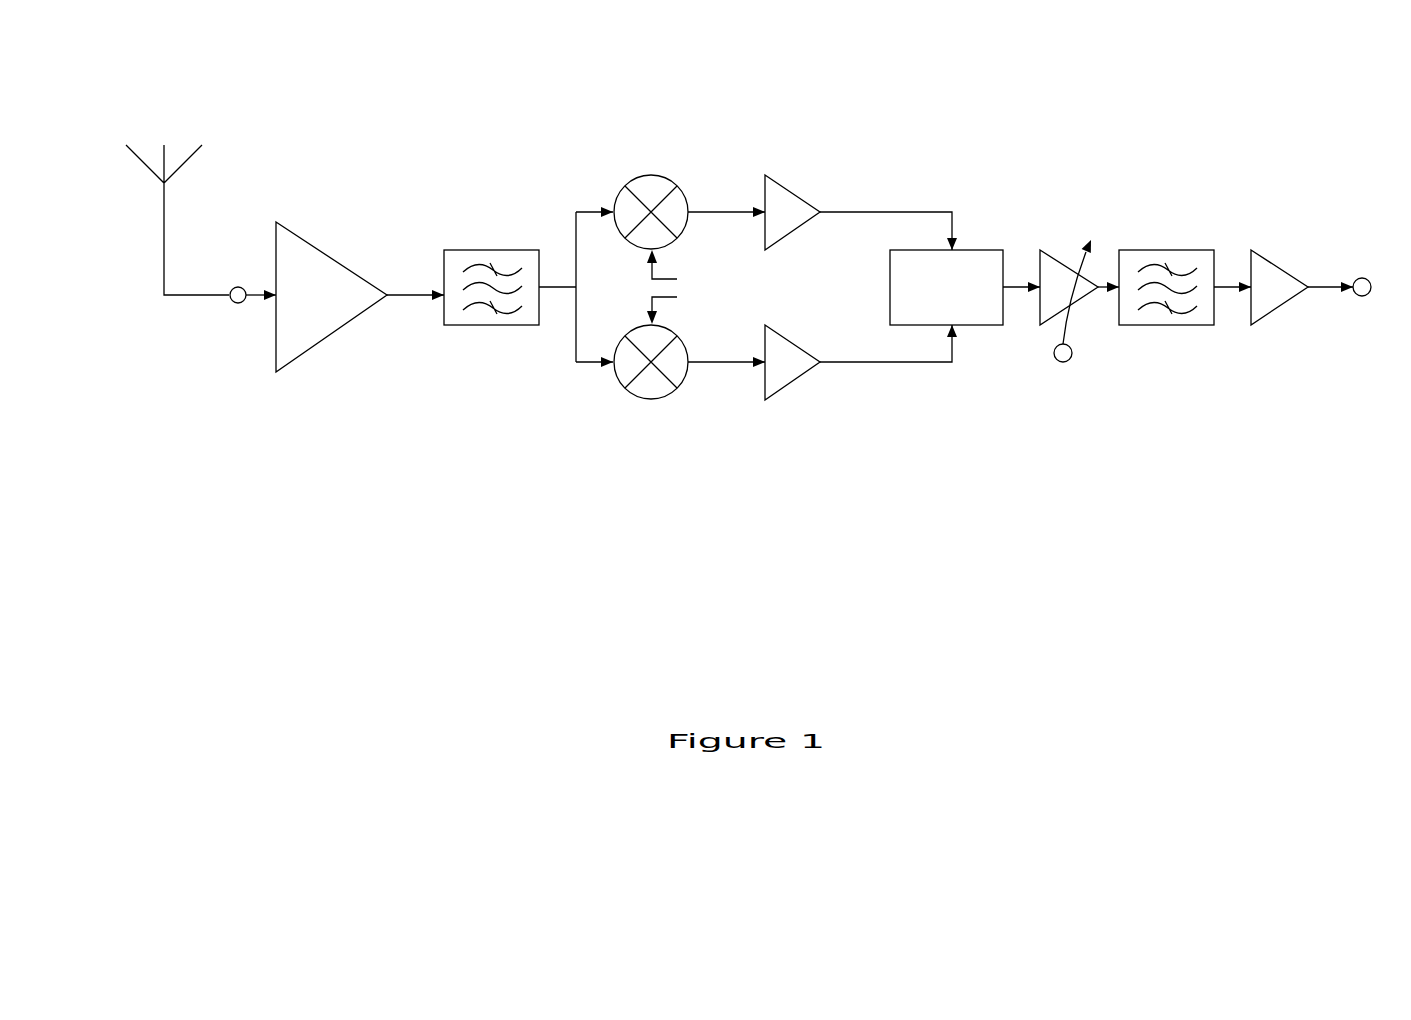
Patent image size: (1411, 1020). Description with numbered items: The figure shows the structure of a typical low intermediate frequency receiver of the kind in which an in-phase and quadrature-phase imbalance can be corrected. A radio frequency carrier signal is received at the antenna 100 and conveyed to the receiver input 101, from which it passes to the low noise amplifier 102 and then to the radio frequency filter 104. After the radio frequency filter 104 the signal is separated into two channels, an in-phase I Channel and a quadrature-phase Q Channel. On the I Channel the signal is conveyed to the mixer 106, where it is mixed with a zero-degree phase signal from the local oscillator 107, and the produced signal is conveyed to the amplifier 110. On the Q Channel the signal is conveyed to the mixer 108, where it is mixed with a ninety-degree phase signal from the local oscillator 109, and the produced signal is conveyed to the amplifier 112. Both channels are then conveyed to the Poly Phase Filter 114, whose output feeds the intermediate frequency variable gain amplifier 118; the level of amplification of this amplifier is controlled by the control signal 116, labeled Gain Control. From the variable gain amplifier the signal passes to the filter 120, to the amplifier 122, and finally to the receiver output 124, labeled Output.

The antenna 100 is at (164, 210).
The receiver input 101 is at (241, 303).
The low noise amplifier 102 is at (292, 231).
The radio frequency filter 104 is at (488, 325).
The mixer 106 is at (657, 174).
The local oscillator 107 is at (646, 271).
The mixer 108 is at (625, 385).
The local oscillator 109 is at (646, 315).
The amplifier 110 is at (790, 188).
The amplifier 112 is at (782, 387).
The Poly Phase Filter 114 is at (890, 290).
The control signal 116 is at (1072, 349).
The Intermediate Frequency Variable Gain Amplifier 118 is at (1048, 246).
The filter 120 is at (1215, 248).
The amplifier 122 is at (1272, 318).
The receiver output 124 is at (1354, 279).